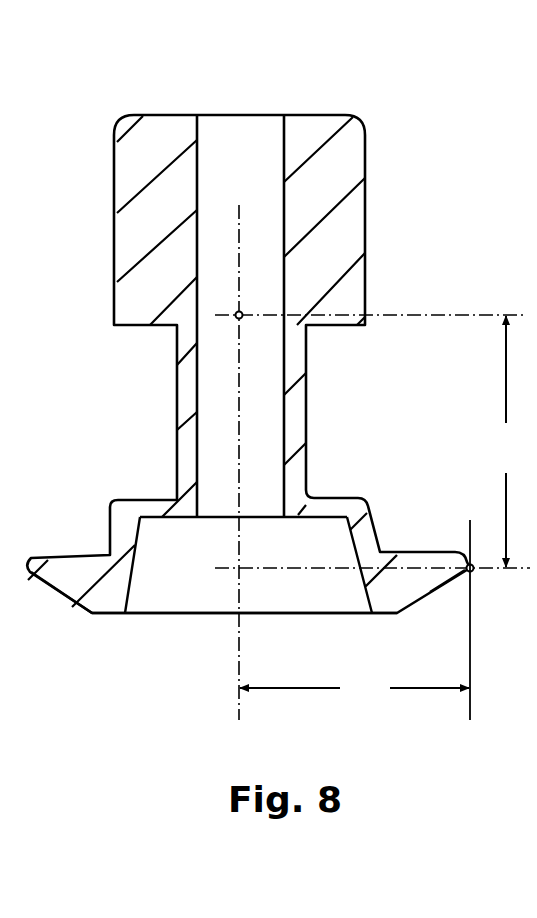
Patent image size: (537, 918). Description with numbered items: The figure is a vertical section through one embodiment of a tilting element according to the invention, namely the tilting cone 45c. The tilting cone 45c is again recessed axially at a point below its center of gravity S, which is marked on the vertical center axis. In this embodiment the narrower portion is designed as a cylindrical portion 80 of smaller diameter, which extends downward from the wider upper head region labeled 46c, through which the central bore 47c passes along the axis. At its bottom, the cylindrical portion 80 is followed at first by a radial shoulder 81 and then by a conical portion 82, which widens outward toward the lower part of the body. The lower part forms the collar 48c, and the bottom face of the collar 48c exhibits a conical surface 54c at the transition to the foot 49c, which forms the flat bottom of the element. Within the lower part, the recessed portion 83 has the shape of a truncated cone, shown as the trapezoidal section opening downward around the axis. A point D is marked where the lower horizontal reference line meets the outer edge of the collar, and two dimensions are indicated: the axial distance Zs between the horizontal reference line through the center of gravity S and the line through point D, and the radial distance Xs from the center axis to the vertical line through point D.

The tilting cone 45c is at (404, 130).
The head portion 46c is at (352, 234).
The central bore 47c is at (274, 152).
The collar 48c is at (74, 577).
The foot 49c is at (112, 608).
The conical surface 54c is at (52, 606).
The cylindrical portion 80 is at (298, 397).
The radial shoulder 81 is at (347, 508).
The conical portion 82 is at (372, 530).
The recessed portion 83 is at (350, 547).
The center of gravity S is at (238, 313).
The reference point D is at (486, 572).
The axial distance Zs is at (512, 441).
The radial distance Xs is at (354, 694).